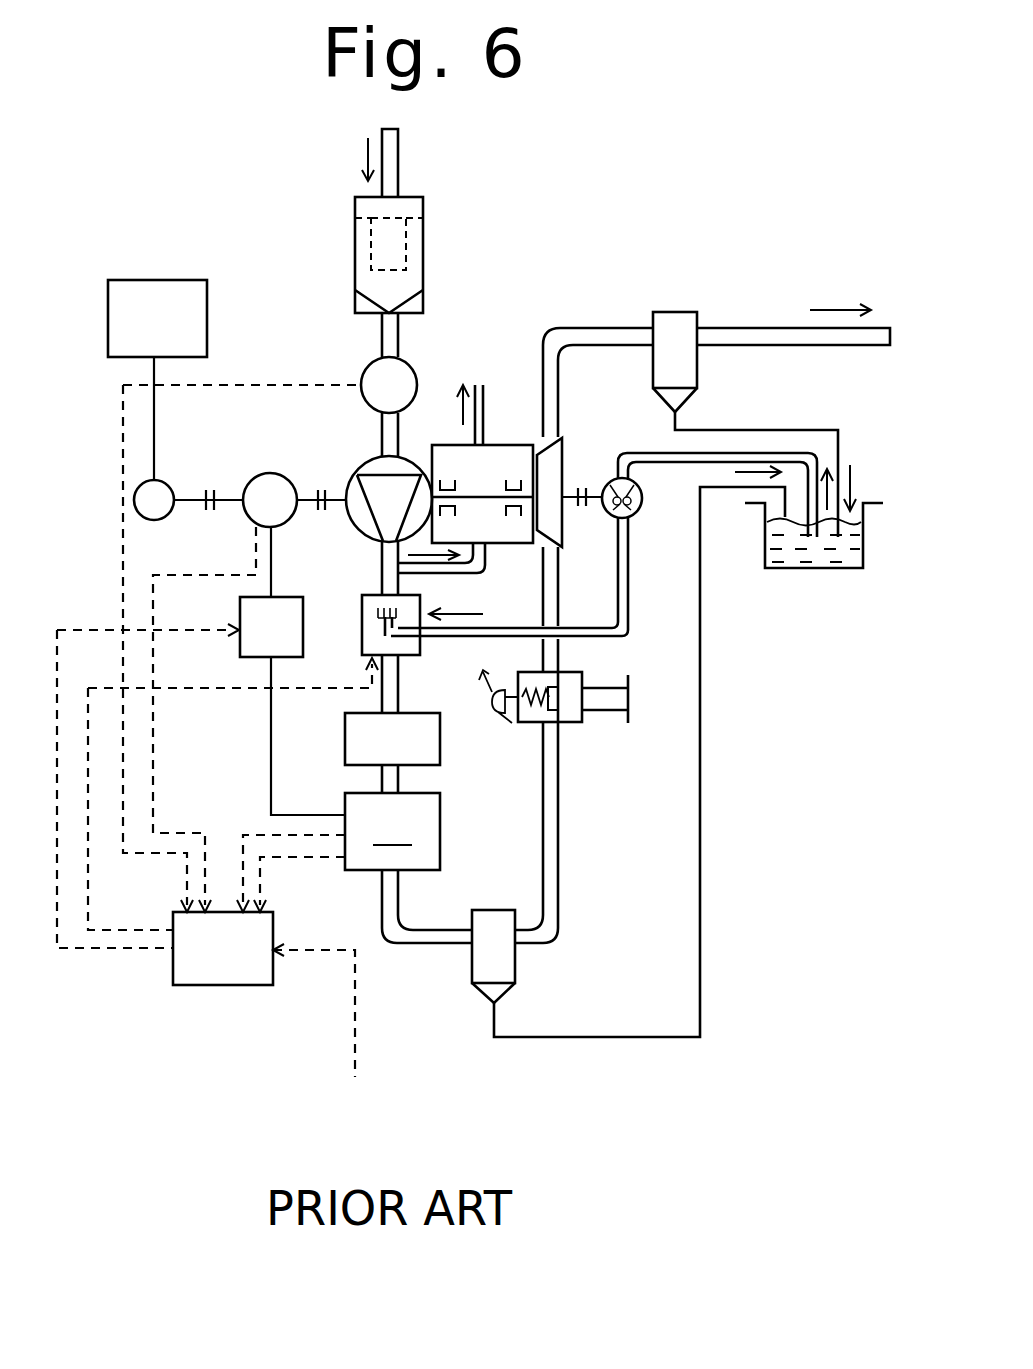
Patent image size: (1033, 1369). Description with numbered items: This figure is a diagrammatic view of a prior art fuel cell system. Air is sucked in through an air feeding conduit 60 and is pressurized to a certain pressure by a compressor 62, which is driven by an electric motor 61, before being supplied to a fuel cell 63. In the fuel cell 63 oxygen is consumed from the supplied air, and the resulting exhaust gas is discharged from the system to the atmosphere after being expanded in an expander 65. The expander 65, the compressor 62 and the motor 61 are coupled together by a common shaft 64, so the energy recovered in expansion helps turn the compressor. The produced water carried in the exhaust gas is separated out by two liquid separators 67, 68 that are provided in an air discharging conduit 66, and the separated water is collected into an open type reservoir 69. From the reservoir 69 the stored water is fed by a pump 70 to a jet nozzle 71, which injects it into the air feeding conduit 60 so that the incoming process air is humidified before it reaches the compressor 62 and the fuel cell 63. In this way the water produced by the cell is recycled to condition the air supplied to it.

The air feeding conduit 60 is at (392, 150).
The electric motor 61 is at (268, 481).
The compressor 62 is at (377, 470).
The fuel cell 63 is at (392, 831).
The common shaft 64 is at (483, 494).
The expander 65 is at (560, 460).
The air discharging conduit 66 is at (556, 812).
The liquid separator 67 is at (482, 967).
The liquid separator 68 is at (677, 320).
The open type reservoir 69 is at (808, 570).
The pump 70 is at (632, 513).
The jet nozzle 71 is at (366, 622).